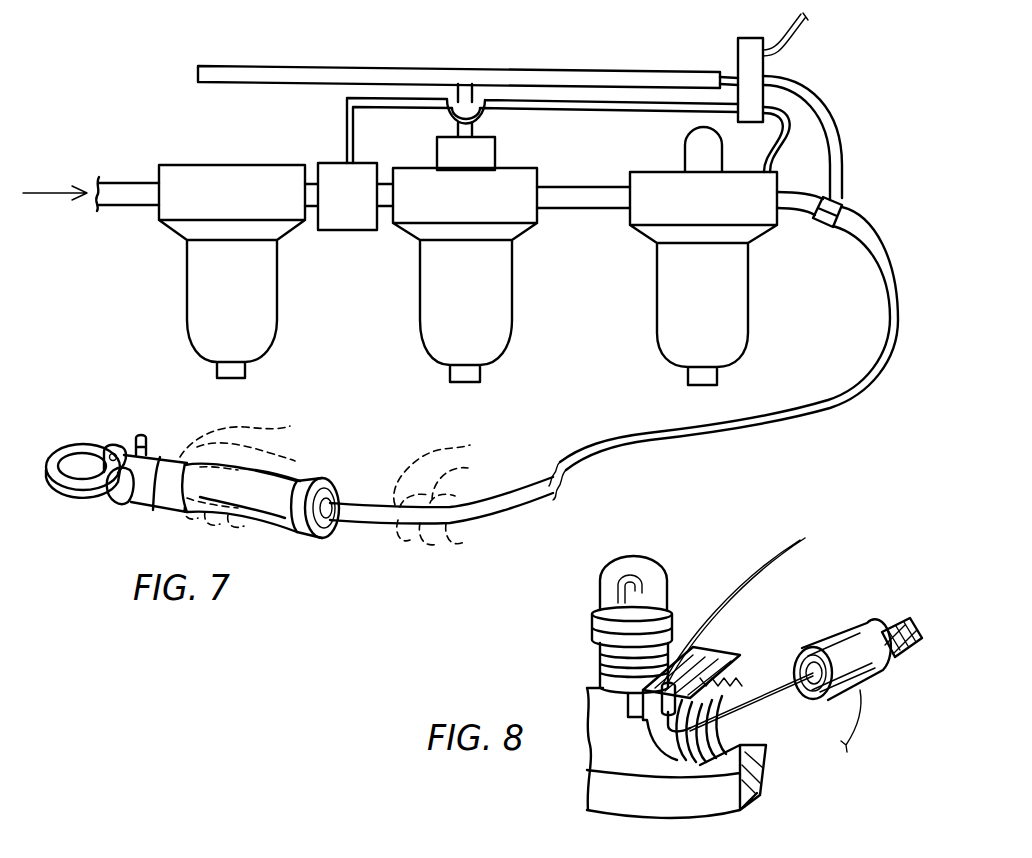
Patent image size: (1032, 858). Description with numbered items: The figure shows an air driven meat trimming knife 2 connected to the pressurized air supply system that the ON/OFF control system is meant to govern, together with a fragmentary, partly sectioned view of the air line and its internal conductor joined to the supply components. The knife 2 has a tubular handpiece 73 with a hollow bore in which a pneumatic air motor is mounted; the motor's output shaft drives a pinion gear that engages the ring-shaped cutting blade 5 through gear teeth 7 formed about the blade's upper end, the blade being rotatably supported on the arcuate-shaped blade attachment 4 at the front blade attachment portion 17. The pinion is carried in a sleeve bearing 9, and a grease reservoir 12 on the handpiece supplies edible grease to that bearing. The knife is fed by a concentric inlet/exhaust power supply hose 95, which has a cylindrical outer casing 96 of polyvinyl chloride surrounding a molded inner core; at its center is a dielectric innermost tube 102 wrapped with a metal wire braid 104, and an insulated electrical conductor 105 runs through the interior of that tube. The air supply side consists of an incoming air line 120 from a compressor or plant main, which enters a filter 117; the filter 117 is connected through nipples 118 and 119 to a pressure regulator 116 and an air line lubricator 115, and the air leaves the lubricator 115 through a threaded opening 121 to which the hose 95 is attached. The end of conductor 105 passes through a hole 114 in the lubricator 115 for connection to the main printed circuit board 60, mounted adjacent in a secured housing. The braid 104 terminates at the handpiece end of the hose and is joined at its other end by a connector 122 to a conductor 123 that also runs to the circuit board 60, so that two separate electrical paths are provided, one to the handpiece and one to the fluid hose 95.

In FIG. 7, the pneumatic meat trimming knife 2 is at (263, 524).
In FIG. 7, the blade attachment 4 is at (128, 440).
In FIG. 7, the cutting blade 5 is at (64, 490).
In FIG. 7, the gear teeth 7 is at (75, 447).
In FIG. 7, the sleeve bearing 9 is at (640, 392).
In FIG. 7, the grease reservoir 12 is at (145, 450).
In FIG. 7, the front blade attachment portion 17 is at (157, 480).
In FIG. 7, the printed circuit board 60 is at (748, 60).
In FIG. 7, the tubular handpiece 73 is at (280, 490).
In FIG. 7, the power supply hose 95 is at (747, 432).
In FIG. 8, the power supply hose 95 is at (836, 632).
In FIG. 8, the outer casing 96 is at (838, 655).
In FIG. 8, the innermost tube 102 is at (806, 673).
In FIG. 8, the metal wire braid 104 is at (898, 627).
In FIG. 8, the insulated electrical conductor 105 is at (756, 705).
In FIG. 8, the hole 114 is at (660, 712).
In FIG. 7, the air line lubricator 115 is at (690, 283).
In FIG. 8, the air line lubricator 115 is at (615, 796).
In FIG. 7, the pressure regulator 116 is at (430, 308).
In FIG. 7, the filter 117 is at (232, 290).
In FIG. 7, the nipple 118 is at (591, 200).
In FIG. 7, the nipple 119 is at (383, 197).
In FIG. 7, the incoming air line 120 is at (133, 195).
In FIG. 8, the threaded opening 121 is at (700, 738).
In FIG. 7, the connector 122 is at (822, 232).
In FIG. 7, the conductor 123 is at (833, 137).